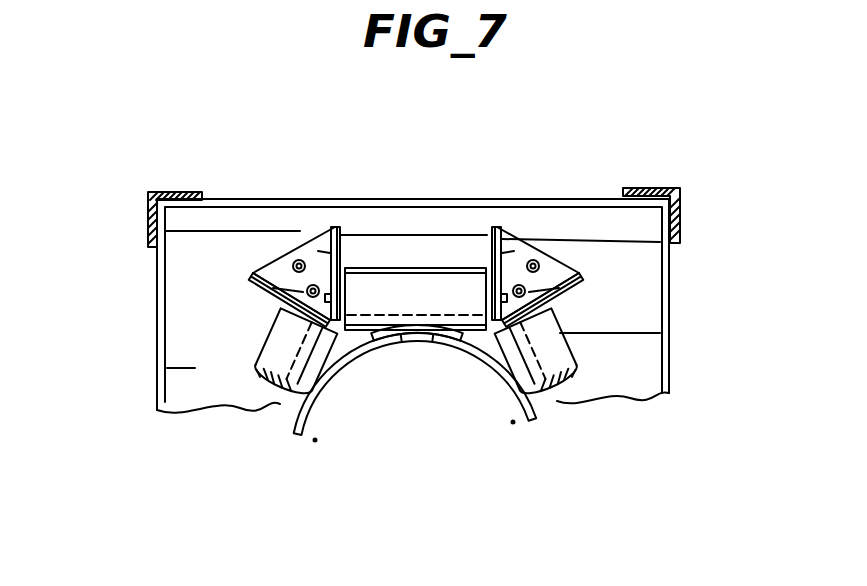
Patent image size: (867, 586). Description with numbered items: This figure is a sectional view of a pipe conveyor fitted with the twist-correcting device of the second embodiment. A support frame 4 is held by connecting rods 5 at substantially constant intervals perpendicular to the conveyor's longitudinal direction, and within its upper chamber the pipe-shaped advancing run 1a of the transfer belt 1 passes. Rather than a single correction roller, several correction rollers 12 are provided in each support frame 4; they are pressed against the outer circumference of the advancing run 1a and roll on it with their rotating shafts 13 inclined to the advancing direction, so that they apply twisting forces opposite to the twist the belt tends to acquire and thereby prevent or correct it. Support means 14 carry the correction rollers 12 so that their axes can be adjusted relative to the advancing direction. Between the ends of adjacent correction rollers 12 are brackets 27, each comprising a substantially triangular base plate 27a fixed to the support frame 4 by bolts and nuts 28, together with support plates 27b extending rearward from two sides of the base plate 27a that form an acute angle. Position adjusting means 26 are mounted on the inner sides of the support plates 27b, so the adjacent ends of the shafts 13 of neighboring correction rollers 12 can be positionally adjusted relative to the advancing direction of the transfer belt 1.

The transfer belt 1 is at (359, 406).
The advancing run 1a is at (291, 428).
The support frame 4 is at (676, 341).
The connecting rod 5 is at (147, 205).
The correction roller 12 is at (507, 370).
The rotating shaft 13 is at (370, 292).
The support means 14 is at (250, 307).
The position adjusting means 26 is at (500, 242).
The bracket 27 is at (382, 215).
The base plate 27a is at (316, 244).
The support plate 27b is at (337, 228).
The bolts and nuts 28 is at (296, 259).